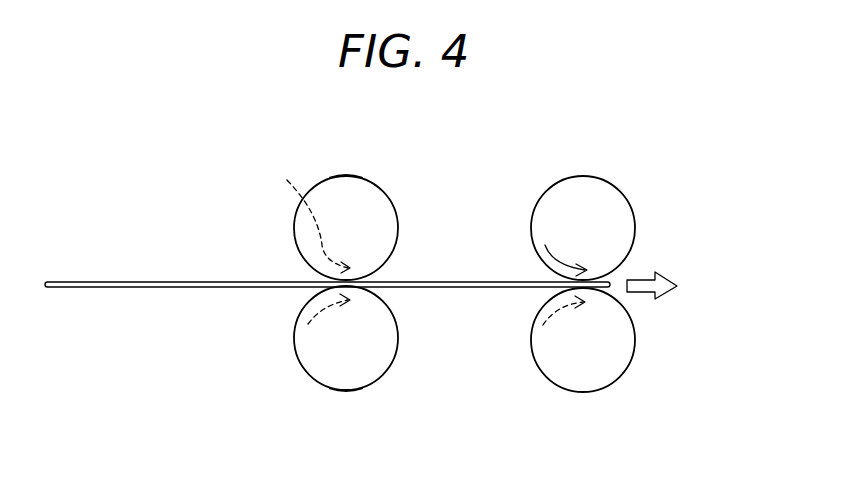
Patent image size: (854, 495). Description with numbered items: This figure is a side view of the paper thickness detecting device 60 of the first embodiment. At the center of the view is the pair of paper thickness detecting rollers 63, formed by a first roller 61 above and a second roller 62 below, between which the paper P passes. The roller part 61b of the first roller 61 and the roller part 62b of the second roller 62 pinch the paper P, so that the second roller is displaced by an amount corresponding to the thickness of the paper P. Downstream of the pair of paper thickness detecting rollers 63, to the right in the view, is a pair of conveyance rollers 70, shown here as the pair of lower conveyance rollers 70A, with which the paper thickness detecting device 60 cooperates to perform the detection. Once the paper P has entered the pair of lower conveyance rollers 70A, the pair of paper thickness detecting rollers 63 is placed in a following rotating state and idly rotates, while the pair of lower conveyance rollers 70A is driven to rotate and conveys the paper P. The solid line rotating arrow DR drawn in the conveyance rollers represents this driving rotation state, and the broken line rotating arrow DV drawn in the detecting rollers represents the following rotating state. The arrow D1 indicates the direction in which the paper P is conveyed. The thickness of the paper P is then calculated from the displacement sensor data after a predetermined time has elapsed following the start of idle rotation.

The paper P is at (105, 281).
The paper thickness detecting device 60 is at (386, 269).
The first roller 61 is at (390, 226).
The roller part 61b is at (345, 190).
The second roller 62 is at (377, 318).
The roller part 62b is at (342, 378).
The pair of paper thickness detecting rollers 63 is at (397, 283).
The pair of conveyance rollers 70 is at (616, 243).
The pair of lower conveyance rollers 70A is at (571, 274).
The broken line rotating arrow DV is at (311, 214).
The solid line rotating arrow DR is at (553, 257).
The sheet conveying direction D1 is at (660, 273).